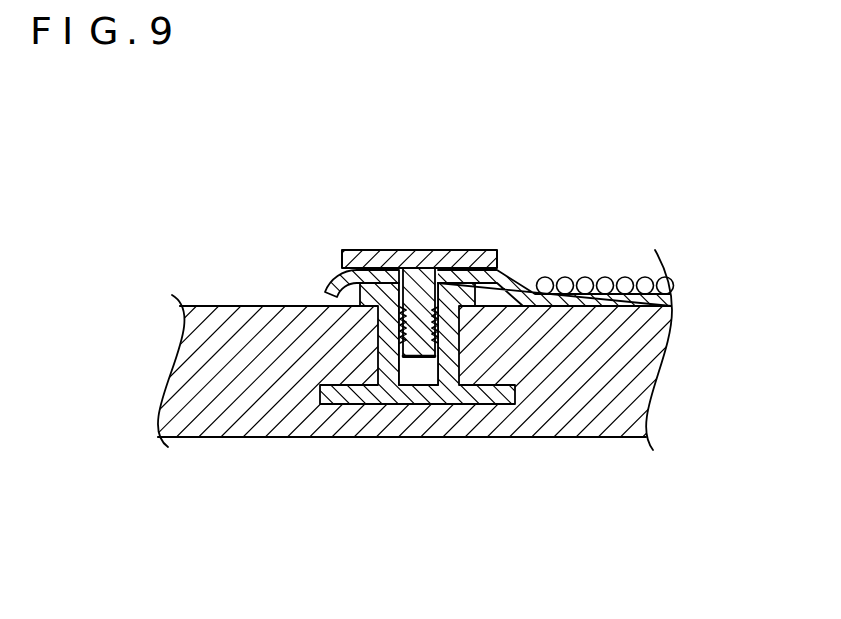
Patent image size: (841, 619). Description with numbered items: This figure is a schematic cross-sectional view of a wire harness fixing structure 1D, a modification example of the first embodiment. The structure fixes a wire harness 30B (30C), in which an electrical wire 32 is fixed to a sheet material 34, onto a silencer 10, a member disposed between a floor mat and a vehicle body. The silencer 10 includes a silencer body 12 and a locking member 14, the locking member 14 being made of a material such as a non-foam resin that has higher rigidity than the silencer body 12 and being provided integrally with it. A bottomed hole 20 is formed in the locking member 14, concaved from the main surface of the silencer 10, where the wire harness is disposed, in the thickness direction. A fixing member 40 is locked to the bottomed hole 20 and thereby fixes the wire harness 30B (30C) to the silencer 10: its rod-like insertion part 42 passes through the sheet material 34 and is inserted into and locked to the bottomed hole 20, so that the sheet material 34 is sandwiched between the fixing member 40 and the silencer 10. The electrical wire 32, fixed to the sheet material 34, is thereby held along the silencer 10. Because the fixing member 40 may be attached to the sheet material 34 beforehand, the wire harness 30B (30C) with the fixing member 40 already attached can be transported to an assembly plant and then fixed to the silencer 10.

The wire harness fixing structure 1D is at (221, 178).
The silencer 10 is at (537, 488).
The silencer body 12 is at (517, 427).
The locking member 14 is at (445, 397).
The bottomed hole 20 is at (407, 375).
The fixing member 40 is at (364, 250).
The insertion part 42 is at (420, 288).
The wire harness 30B is at (607, 229).
The wire harness 30C is at (494, 266).
The sheet material 34 is at (514, 282).
The electrical wire 32 is at (603, 277).